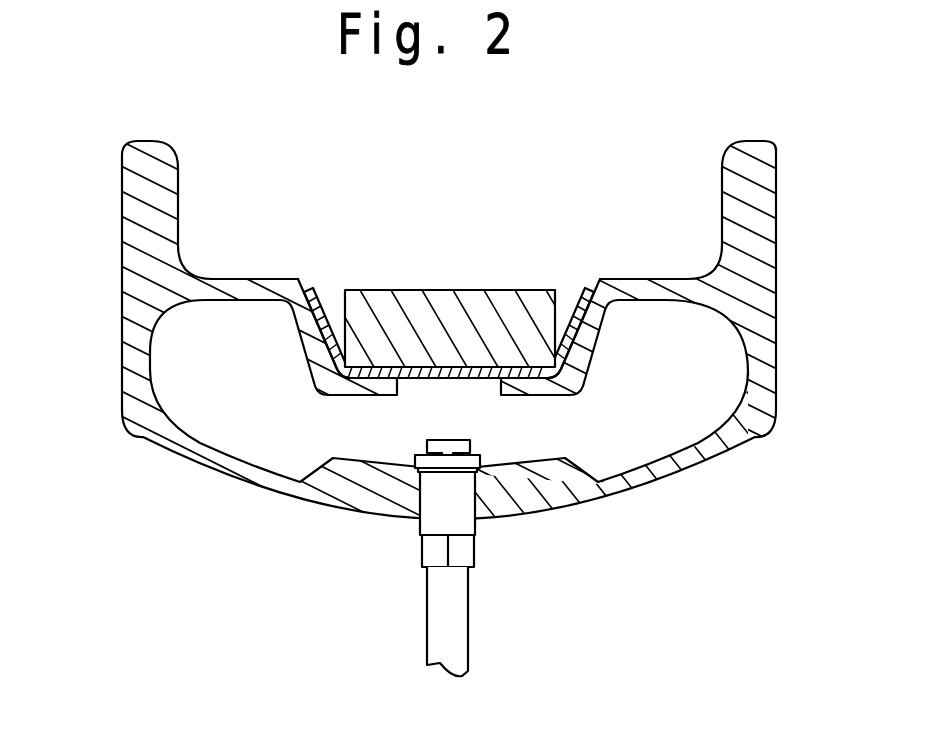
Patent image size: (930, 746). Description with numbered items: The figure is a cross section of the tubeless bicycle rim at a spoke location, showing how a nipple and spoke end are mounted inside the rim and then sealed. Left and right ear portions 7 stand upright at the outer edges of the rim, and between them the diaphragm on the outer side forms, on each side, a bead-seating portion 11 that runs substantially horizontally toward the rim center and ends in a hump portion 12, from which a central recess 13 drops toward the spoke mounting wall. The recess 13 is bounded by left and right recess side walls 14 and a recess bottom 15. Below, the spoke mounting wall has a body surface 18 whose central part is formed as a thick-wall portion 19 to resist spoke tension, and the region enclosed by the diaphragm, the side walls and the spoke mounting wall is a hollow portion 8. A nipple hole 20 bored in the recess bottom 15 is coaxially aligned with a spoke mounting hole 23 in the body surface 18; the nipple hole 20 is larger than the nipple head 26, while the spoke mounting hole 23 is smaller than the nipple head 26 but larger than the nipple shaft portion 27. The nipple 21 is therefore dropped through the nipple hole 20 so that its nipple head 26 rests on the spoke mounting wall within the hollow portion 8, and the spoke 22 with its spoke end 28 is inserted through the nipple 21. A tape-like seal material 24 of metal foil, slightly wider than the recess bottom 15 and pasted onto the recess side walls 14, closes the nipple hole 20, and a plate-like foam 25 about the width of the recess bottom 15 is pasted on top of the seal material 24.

The ear portion 7 is at (143, 179).
The hollow portion 8 is at (683, 373).
The bead-seating portion 11 is at (233, 278).
The hump portion 12 is at (293, 277).
The recess 13 is at (573, 285).
The recess side wall 14 is at (336, 339).
The recess bottom 15 is at (387, 381).
The body surface 18 is at (555, 520).
The thick-wall portion 19 is at (360, 487).
The nipple hole 20 is at (479, 400).
The nipple 21 is at (400, 533).
The spoke 22 is at (424, 593).
The spoke mounting hole 23 is at (477, 490).
The seal material 24 is at (323, 293).
The foam 25 is at (470, 300).
The nipple head 26 is at (415, 471).
The nipple shaft portion 27 is at (440, 513).
The spoke end 28 is at (452, 633).